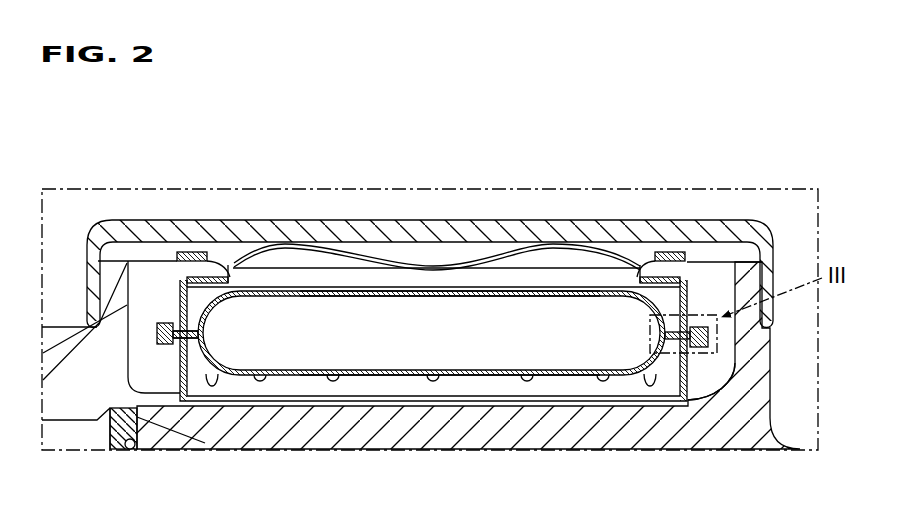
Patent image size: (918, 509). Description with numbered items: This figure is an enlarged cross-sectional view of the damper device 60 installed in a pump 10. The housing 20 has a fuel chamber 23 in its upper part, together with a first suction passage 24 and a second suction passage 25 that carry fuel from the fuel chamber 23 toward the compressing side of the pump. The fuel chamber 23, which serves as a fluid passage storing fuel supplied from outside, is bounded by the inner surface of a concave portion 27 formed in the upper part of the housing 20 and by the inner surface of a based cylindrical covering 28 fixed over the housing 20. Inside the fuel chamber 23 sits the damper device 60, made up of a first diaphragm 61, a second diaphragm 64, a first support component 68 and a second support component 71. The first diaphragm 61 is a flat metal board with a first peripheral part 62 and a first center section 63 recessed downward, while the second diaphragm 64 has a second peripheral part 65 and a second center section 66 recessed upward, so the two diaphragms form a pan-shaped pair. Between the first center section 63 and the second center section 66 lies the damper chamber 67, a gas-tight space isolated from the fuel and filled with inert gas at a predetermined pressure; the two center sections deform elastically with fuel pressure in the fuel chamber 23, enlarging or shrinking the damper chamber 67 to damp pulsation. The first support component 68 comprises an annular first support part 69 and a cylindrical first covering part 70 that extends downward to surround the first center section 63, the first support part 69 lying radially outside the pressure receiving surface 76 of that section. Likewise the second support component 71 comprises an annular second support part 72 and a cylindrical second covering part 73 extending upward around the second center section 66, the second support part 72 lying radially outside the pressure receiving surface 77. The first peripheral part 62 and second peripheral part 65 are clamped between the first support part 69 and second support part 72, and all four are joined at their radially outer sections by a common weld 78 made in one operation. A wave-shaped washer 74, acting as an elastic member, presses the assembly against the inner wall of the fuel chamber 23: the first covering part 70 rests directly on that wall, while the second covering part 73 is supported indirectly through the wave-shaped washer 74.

The pressure sensor 10 is at (762, 206).
The housing 20 is at (757, 411).
The fuel chamber 23 is at (706, 288).
The first suction passage 24 is at (88, 386).
The second suction passage 25 is at (70, 438).
The concave portion 27 is at (740, 363).
The based cylindrical covering 28 is at (100, 246).
The damper device 60 is at (152, 318).
The first diaphragm 61 is at (453, 377).
The first peripheral part 62 is at (187, 410).
The first center section 63 is at (497, 375).
The second diaphragm 64 is at (453, 290).
The second peripheral part 65 is at (196, 252).
The second center section 66 is at (492, 292).
The damper chamber 67 is at (427, 318).
The first support component 68 is at (197, 350).
The first support part 69 is at (148, 387).
The first covering part 70 is at (147, 423).
The second support component 71 is at (154, 277).
The second support part 72 is at (113, 258).
The second covering part 73 is at (173, 280).
The wave-shaped washer 74 is at (548, 247).
The pressure receiving surface 76 is at (395, 375).
The pressure receiving surface 77 is at (388, 293).
The weld 78 is at (822, 333).